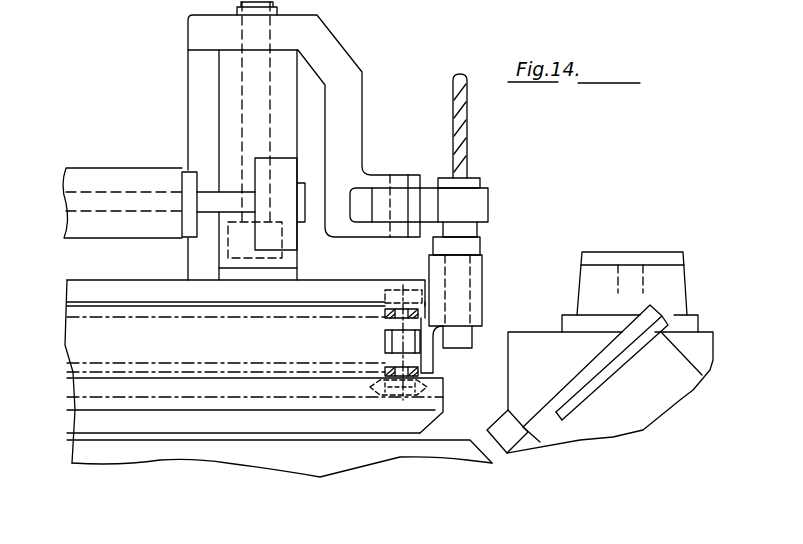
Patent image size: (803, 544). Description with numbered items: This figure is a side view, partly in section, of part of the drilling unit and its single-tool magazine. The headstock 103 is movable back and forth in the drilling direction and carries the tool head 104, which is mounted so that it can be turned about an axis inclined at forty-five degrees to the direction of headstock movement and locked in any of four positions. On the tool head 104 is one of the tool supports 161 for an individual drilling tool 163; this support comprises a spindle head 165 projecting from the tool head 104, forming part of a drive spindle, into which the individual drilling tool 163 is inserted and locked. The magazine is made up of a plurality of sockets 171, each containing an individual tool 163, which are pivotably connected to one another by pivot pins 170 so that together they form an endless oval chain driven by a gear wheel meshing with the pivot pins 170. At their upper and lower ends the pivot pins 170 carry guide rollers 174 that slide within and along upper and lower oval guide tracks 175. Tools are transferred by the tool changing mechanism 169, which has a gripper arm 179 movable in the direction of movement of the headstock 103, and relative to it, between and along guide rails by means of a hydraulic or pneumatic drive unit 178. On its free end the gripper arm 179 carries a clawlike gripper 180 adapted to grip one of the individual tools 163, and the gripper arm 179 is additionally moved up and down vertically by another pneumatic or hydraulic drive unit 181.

The headstock 103 is at (263, 453).
The tool head 104 is at (520, 371).
The tool support 161 is at (577, 318).
The individual drilling tool 163 is at (462, 160).
The spindle head 165 is at (608, 272).
The tool changing mechanism 169 is at (168, 138).
The pivot pin 170 is at (400, 343).
The socket 171 is at (478, 280).
The guide roller 174 is at (390, 297).
The guide track 175 is at (383, 395).
The drive unit 178 is at (88, 178).
The gripper arm 179 is at (342, 67).
The clawlike gripper 180 is at (478, 206).
The drive unit 181 is at (233, 87).